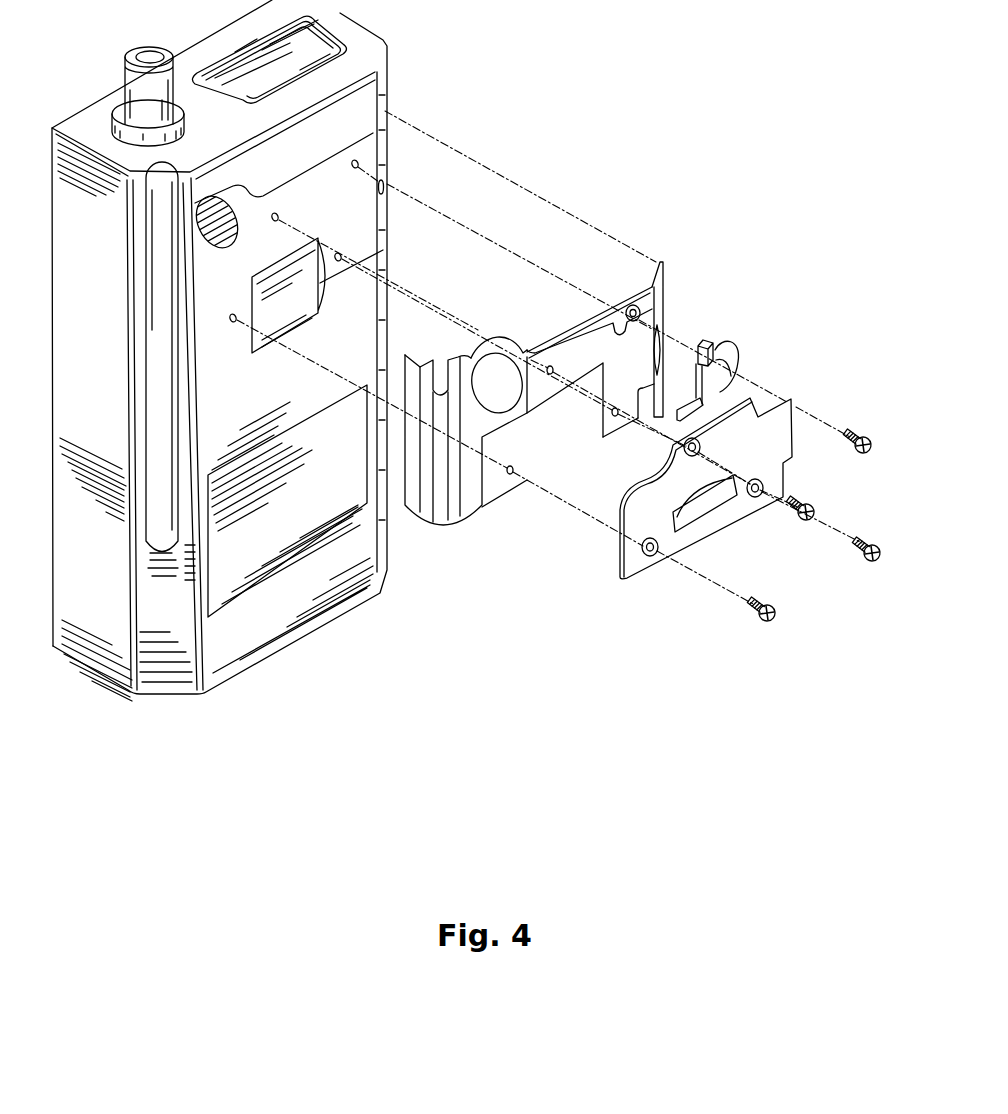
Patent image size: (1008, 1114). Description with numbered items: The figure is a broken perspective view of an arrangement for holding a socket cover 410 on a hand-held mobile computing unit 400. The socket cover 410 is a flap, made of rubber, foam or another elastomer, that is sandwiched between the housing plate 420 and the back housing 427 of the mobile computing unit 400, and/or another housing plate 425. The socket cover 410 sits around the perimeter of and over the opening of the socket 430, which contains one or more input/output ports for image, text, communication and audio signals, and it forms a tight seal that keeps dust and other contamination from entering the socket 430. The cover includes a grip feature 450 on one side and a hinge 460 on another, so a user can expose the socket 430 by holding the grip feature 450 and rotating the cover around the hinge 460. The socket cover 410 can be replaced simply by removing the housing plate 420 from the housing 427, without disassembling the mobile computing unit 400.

The mobile computing unit 400 is at (737, 66).
The housing 427 is at (360, 97).
The socket 430 is at (388, 178).
The housing plate 425 is at (665, 287).
The grip feature 450 is at (712, 338).
The socket cover 410 is at (735, 345).
The housing plate 420 is at (794, 394).
The hinge 460 is at (653, 440).